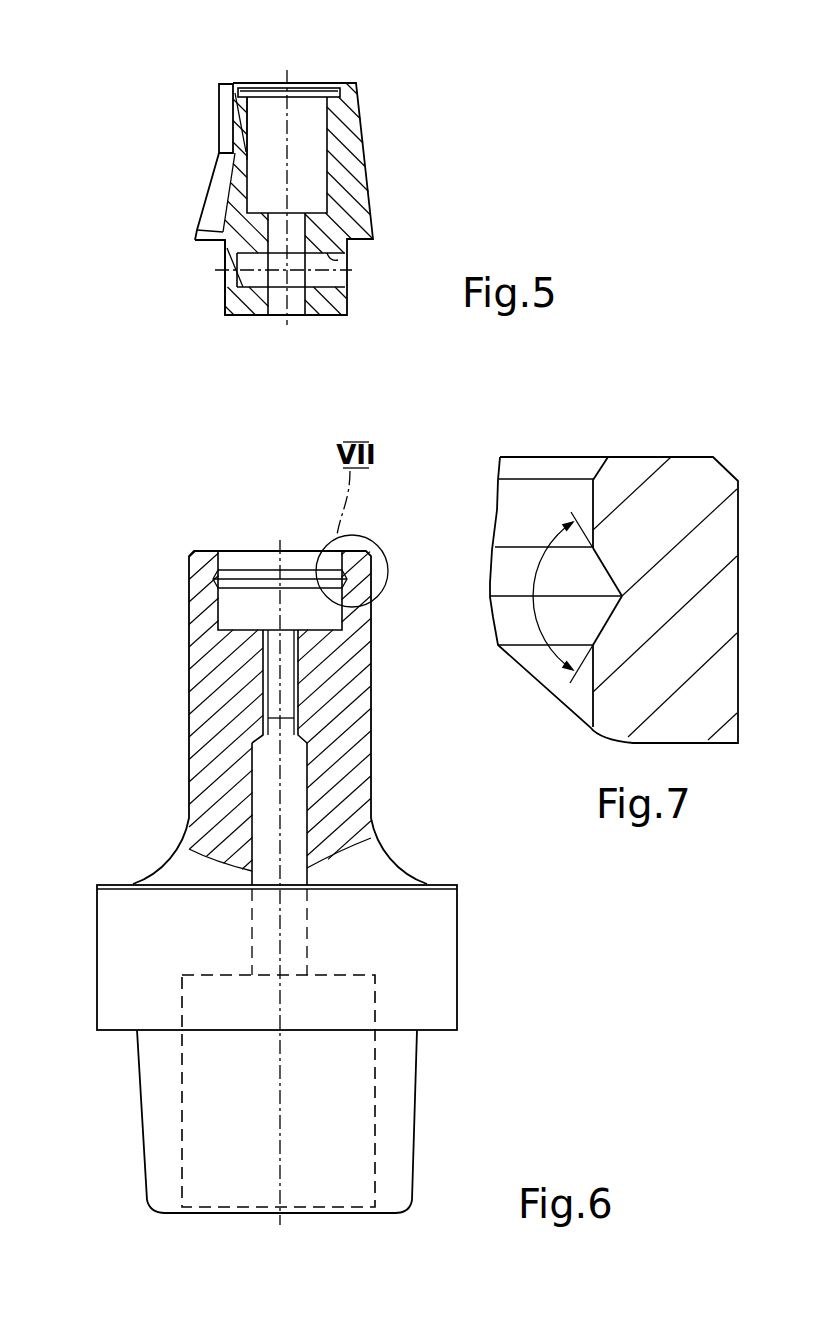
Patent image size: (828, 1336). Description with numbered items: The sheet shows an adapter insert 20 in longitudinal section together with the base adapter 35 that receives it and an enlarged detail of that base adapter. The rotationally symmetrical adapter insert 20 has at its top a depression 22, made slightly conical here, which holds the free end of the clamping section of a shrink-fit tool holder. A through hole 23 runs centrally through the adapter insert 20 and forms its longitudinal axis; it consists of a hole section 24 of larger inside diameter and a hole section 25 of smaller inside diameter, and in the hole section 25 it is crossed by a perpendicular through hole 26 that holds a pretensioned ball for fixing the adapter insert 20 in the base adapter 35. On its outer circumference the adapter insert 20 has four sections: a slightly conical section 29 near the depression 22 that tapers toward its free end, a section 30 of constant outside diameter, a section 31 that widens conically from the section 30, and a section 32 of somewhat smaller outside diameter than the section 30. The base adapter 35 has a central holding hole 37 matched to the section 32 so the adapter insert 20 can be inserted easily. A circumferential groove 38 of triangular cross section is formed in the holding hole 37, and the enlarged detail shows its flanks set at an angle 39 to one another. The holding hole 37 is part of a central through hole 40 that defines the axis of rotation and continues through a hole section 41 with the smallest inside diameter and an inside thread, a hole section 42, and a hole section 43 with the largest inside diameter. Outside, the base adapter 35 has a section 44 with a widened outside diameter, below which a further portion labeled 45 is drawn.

In FIG. 5, the adapter insert 20 is at (364, 122).
In FIG. 5, the depression 22 is at (328, 88).
In FIG. 5, the through hole 23 is at (318, 157).
In FIG. 5, the hole section 24 is at (246, 138).
In FIG. 5, the hole section 25 is at (298, 300).
In FIG. 5, the through hole 26 is at (349, 262).
In FIG. 5, the section 29 is at (221, 89).
In FIG. 5, the section 30 is at (218, 138).
In FIG. 5, the section 31 is at (203, 193).
In FIG. 5, the section 32 is at (222, 283).
In FIG. 6, the base adapter 35 is at (158, 810).
In FIG. 6, the holding hole 37 is at (222, 610).
In FIG. 7, the holding hole 37 is at (592, 498).
In FIG. 6, the circumferential groove 38 is at (230, 578).
In FIG. 7, the circumferential groove 38 is at (596, 573).
In FIG. 7, the angle 39 is at (528, 613).
In FIG. 6, the central through hole 40 is at (302, 930).
In FIG. 6, the hole section 41 is at (266, 650).
In FIG. 6, the hole section 42 is at (252, 852).
In FIG. 6, the hole section 43 is at (182, 1137).
In FIG. 6, the section 44 is at (458, 948).
In FIG. 6, the threaded section 45 is at (417, 1100).